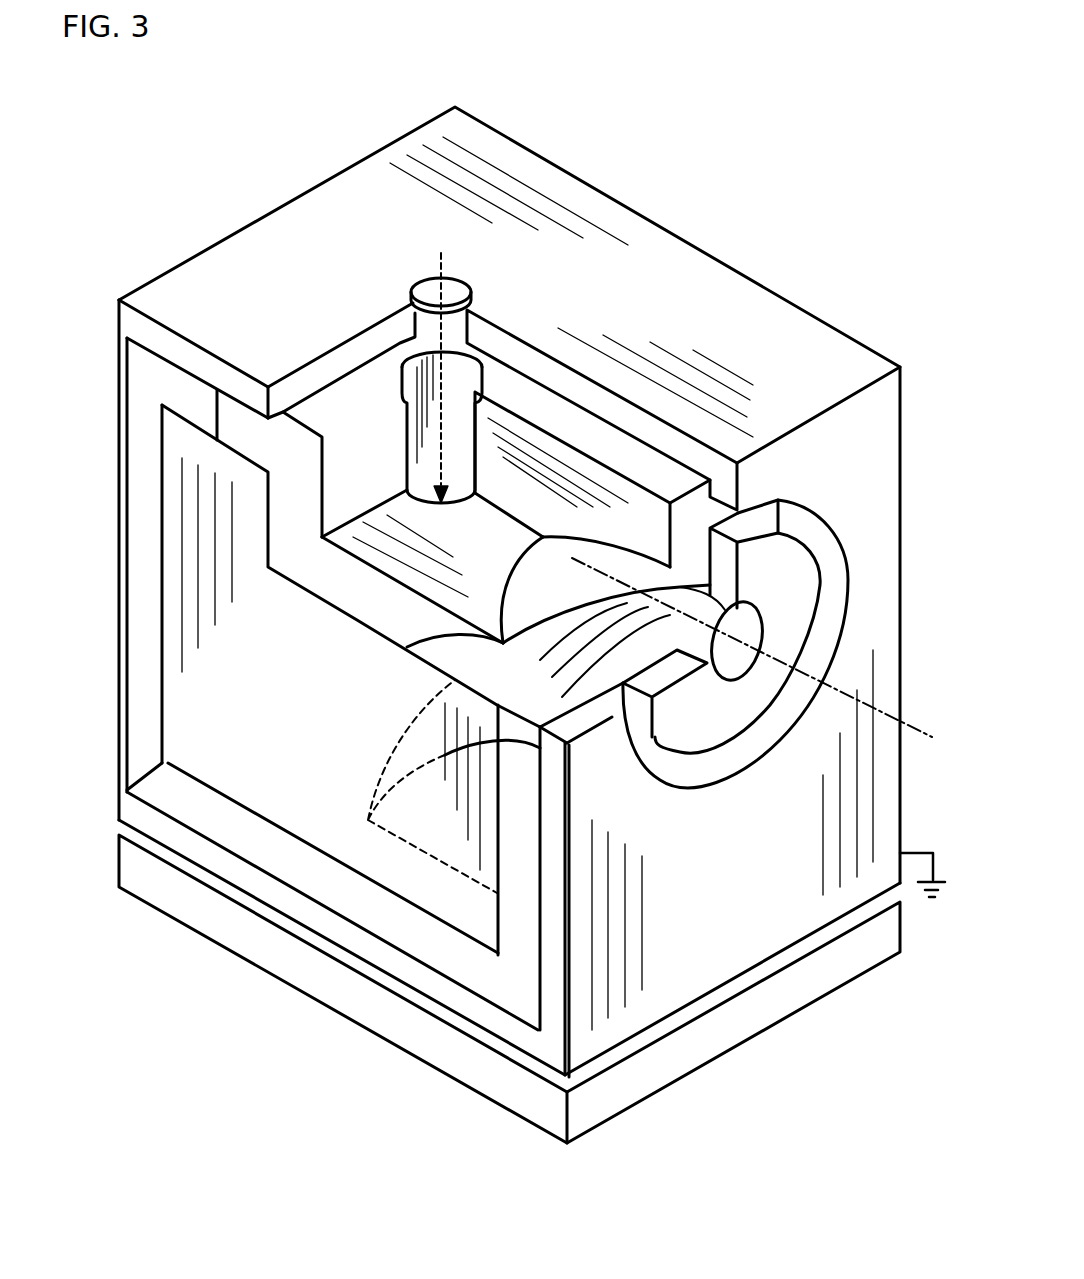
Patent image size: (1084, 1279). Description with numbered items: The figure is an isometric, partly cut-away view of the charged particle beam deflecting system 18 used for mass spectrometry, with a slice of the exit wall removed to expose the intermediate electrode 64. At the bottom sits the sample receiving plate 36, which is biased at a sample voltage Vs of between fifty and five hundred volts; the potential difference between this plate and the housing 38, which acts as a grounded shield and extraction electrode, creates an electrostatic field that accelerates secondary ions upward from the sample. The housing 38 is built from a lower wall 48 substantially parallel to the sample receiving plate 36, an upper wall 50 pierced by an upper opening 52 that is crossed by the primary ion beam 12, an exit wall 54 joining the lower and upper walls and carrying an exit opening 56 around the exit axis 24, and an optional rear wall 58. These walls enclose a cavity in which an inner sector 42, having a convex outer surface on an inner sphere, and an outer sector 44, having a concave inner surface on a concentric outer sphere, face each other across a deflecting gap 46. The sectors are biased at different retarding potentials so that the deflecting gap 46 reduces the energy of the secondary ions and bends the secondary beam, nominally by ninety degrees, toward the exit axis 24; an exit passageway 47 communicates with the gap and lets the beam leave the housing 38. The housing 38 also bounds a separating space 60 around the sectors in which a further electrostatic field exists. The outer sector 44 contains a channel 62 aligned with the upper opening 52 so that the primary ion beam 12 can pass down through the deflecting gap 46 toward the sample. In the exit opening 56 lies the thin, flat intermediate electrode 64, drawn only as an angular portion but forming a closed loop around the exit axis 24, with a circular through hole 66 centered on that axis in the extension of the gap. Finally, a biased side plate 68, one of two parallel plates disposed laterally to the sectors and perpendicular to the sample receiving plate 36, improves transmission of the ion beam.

The charged particle beam deflecting system 18 is at (257, 148).
The housing 38 is at (803, 222).
The primary ion beam 12 is at (441, 255).
The upper opening 52 is at (430, 301).
The separating space 60 is at (520, 390).
The channel 62 is at (427, 465).
The rear wall 58 is at (125, 372).
The upper wall 50 is at (609, 285).
The outer sector 44 is at (506, 558).
The deflecting gap 46 is at (553, 593).
The exit passageway 47 is at (696, 635).
The exit opening 56 is at (796, 515).
The through hole 66 is at (746, 626).
The intermediate electrode 64 is at (716, 735).
The exit axis 24 is at (933, 733).
The inner sector 42 is at (534, 730).
The side plate 68 is at (346, 742).
The lower wall 48 is at (132, 810).
The exit wall 54 is at (744, 878).
The sample receiving plate 36 is at (336, 988).
The sample voltage Vs is at (172, 900).